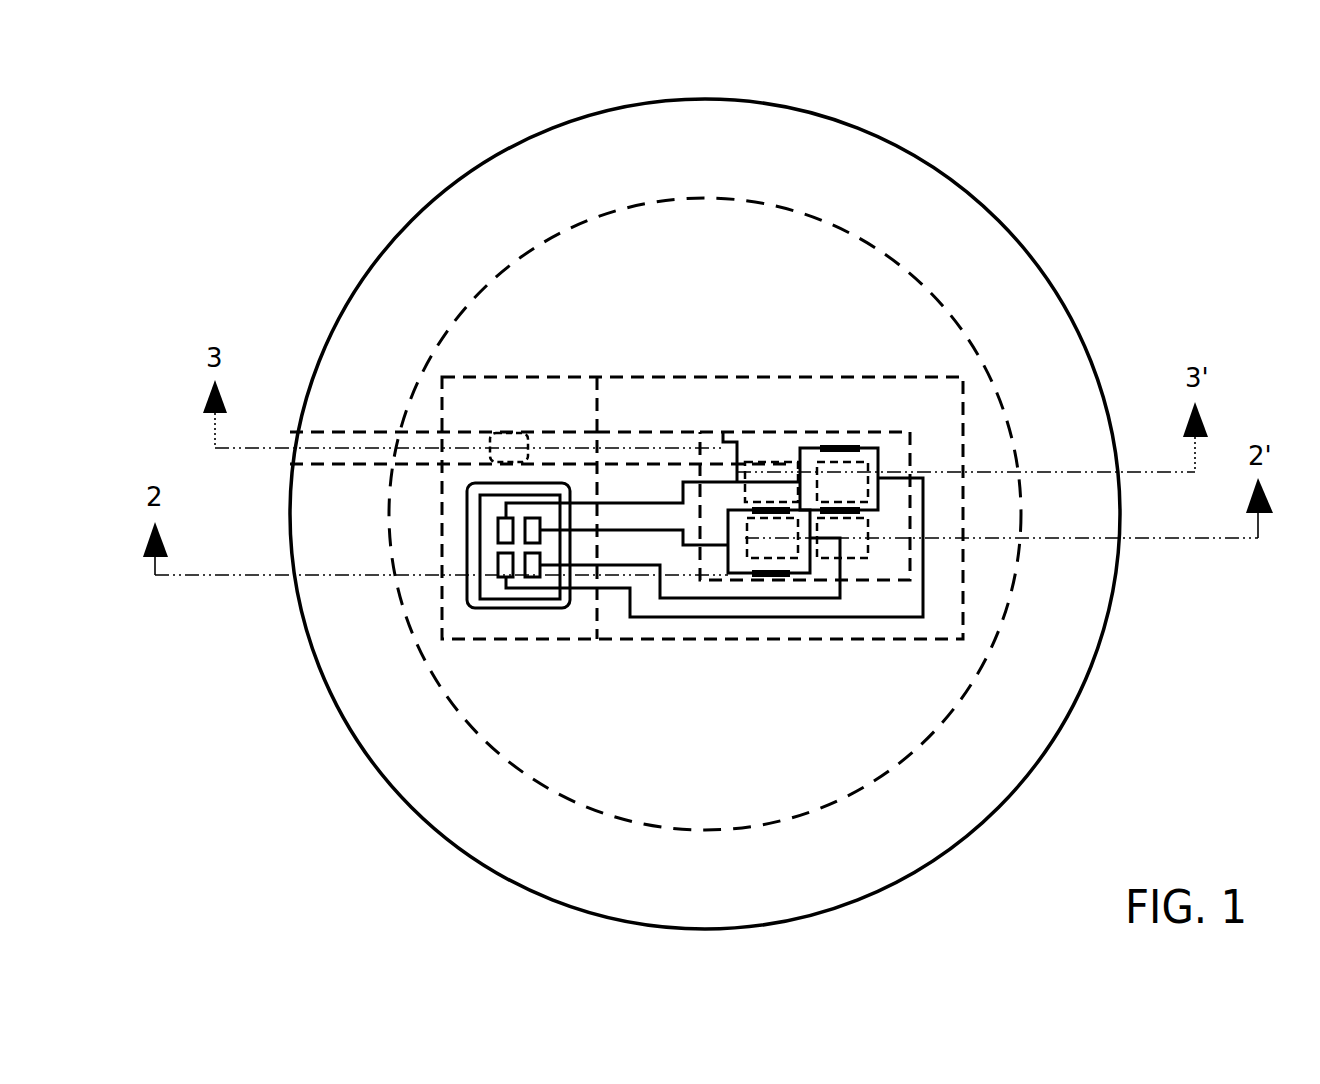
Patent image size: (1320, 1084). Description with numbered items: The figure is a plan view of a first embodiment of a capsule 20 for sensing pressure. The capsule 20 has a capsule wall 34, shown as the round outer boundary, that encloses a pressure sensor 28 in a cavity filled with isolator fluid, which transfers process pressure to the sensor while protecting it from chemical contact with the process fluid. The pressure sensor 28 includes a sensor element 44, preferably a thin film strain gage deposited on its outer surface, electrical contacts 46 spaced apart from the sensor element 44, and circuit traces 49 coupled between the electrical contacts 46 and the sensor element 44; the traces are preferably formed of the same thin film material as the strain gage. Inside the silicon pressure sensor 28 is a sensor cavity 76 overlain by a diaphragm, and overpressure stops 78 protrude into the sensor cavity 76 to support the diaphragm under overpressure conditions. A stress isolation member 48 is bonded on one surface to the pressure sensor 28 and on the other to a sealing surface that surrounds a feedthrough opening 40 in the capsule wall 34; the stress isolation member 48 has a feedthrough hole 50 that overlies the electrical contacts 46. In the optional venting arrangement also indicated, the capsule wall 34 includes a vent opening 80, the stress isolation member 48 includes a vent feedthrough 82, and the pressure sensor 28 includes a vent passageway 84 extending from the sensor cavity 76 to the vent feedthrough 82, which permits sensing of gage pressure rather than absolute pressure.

The capsule 20 is at (1030, 172).
The capsule wall 34 is at (420, 207).
The pressure sensor 28 is at (883, 377).
The stress isolation member 48 is at (598, 610).
The vent opening 80 is at (378, 432).
The vent passageway 84 is at (627, 432).
The sensor cavity 76 is at (910, 452).
The vent feedthrough 82 is at (502, 427).
The sensor element 44 is at (840, 448).
The overpressure stops 78 is at (858, 558).
The feedthrough opening 40 is at (492, 608).
The feedthrough hole 50 is at (527, 598).
The electrical contacts 46 is at (498, 563).
The circuit traces 49 is at (650, 503).